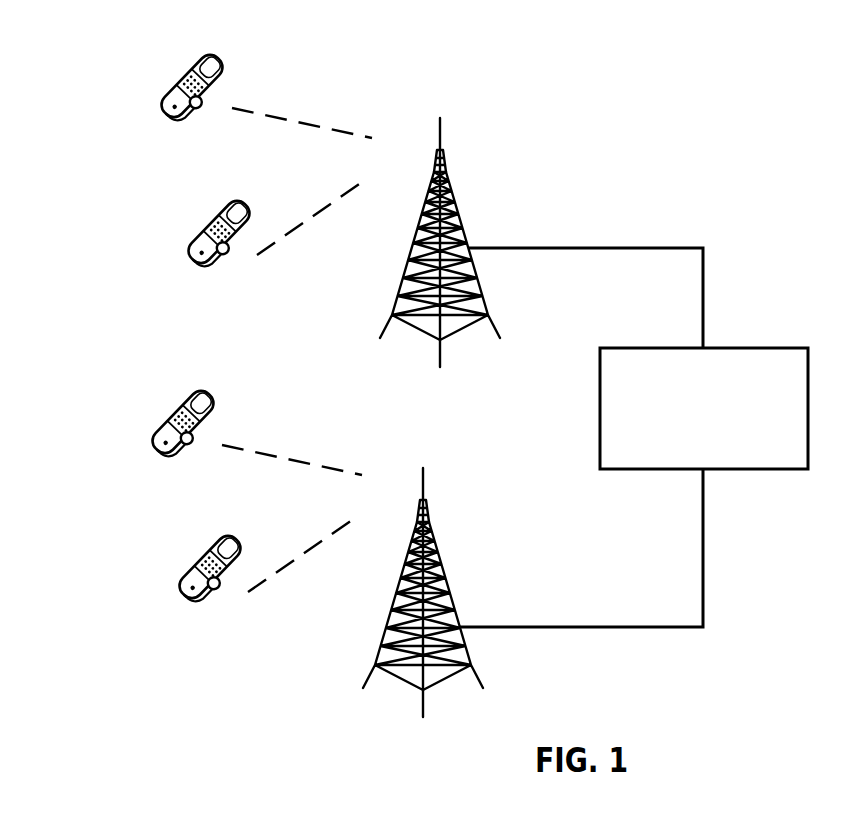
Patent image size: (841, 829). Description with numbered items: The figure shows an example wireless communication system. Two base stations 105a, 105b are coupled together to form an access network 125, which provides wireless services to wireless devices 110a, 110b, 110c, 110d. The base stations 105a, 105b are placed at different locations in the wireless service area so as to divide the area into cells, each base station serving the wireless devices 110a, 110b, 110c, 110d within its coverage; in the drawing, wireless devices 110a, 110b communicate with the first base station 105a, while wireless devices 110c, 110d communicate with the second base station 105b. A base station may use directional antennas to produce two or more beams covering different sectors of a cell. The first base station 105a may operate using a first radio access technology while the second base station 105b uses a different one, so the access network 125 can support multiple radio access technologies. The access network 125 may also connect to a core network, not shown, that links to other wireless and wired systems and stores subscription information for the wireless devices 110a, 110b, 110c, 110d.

The base station 105a is at (453, 198).
The base station 105b is at (430, 513).
The wireless device 110a is at (174, 60).
The wireless device 110b is at (202, 206).
The wireless device 110c is at (166, 394).
The wireless device 110d is at (193, 539).
The access network 125 is at (612, 347).